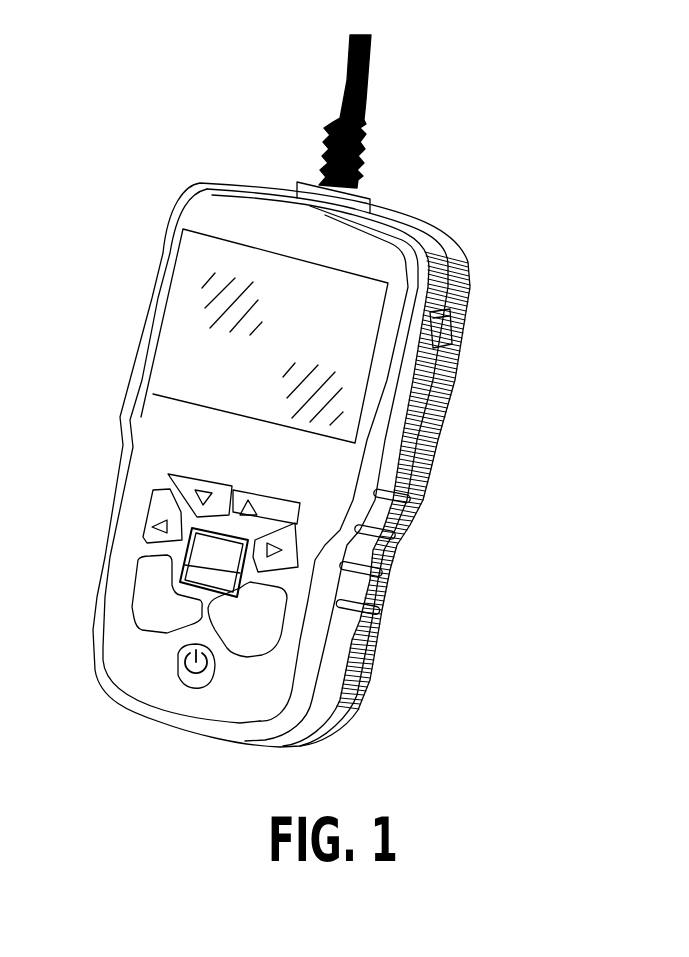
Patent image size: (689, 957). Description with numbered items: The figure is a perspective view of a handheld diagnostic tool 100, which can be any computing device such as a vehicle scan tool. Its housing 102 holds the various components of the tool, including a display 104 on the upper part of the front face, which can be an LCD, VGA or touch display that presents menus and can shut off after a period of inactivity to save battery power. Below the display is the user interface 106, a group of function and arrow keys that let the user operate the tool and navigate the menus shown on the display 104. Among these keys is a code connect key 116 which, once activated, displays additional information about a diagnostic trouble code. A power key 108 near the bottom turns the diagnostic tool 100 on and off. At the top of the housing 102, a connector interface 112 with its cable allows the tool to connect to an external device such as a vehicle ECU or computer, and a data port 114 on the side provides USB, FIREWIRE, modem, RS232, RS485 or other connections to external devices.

The diagnostic tool 100 is at (486, 209).
The housing 102 is at (430, 452).
The display 104 is at (188, 310).
The user interface 106 is at (150, 590).
The power key 108 is at (181, 670).
The connector interface 112 is at (362, 193).
The data port 114 is at (440, 323).
The code connect key 116 is at (230, 560).